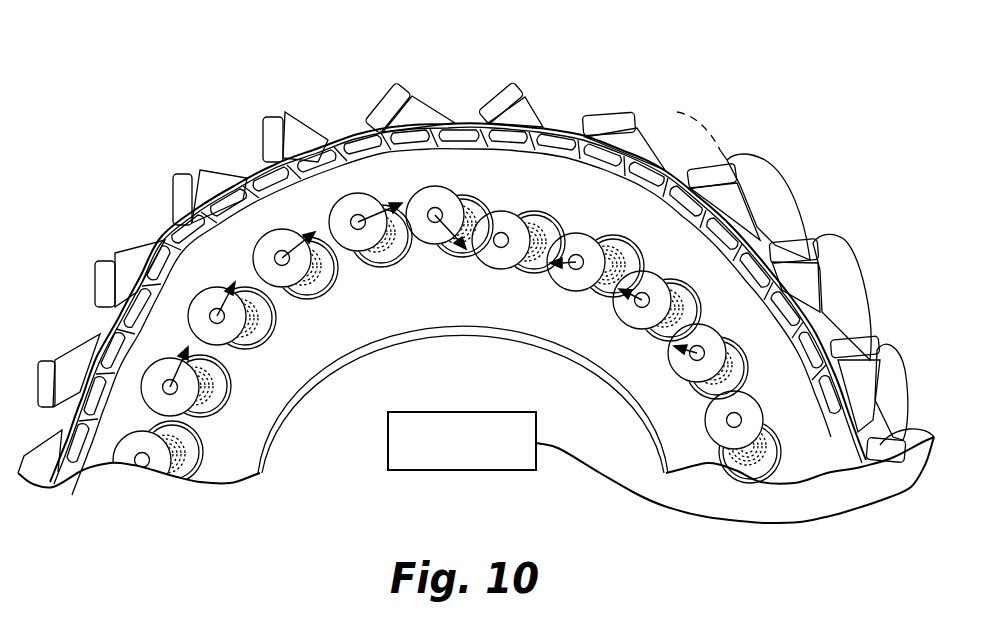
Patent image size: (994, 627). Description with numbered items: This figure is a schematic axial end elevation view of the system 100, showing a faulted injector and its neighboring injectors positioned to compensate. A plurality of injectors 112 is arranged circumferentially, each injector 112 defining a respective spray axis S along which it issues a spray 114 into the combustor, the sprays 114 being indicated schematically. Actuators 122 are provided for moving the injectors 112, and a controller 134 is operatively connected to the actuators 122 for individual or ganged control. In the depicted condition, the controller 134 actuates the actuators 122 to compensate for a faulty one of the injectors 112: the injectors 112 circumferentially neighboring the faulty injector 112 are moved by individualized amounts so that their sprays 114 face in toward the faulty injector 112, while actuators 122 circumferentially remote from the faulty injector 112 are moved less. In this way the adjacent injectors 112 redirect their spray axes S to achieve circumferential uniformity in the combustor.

The system 100 is at (184, 66).
The injector 112 is at (437, 216).
The spray 114 is at (358, 195).
The actuator 122 is at (282, 125).
The controller 134 is at (507, 470).
The spray axis S is at (378, 200).